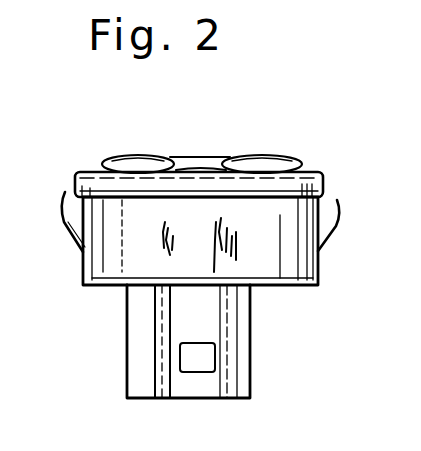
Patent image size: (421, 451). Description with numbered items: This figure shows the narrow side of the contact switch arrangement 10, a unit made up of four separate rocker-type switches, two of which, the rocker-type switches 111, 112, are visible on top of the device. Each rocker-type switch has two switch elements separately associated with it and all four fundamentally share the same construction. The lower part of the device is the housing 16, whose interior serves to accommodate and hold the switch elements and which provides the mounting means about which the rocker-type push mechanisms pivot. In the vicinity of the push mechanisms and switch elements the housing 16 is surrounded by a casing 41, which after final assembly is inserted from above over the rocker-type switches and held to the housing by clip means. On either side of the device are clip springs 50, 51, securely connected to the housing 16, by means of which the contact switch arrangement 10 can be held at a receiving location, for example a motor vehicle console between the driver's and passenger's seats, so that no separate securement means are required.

The contact switch arrangement 10 is at (188, 228).
The rocker-type switch 111 is at (113, 148).
The rocker-type switch 112 is at (297, 168).
The casing 41 is at (321, 207).
The clip spring 51 is at (66, 228).
The clip spring 50 is at (338, 232).
The housing 16 is at (108, 288).